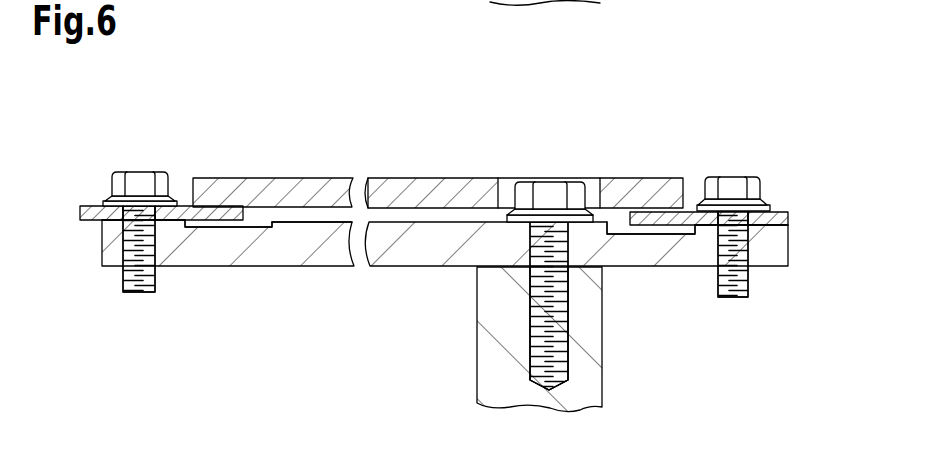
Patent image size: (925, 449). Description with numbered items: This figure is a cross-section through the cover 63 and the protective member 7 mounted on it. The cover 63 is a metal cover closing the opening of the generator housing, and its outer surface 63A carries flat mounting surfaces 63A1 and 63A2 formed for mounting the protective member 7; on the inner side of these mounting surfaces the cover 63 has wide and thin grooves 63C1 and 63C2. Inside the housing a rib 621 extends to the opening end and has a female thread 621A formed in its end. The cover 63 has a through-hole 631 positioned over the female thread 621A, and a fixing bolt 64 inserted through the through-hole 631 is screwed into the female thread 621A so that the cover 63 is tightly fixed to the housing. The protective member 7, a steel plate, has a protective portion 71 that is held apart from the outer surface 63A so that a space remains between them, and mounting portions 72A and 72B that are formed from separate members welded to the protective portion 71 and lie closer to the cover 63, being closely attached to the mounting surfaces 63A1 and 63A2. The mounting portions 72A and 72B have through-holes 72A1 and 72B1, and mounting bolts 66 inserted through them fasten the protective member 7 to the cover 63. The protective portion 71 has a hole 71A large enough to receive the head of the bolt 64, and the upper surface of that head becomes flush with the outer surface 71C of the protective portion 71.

The protective member 7 is at (464, 146).
The cover 63 is at (293, 250).
The outer surface 63A is at (330, 220).
The mounting surface 63A1 is at (773, 212).
The mounting surface 63A2 is at (108, 200).
The groove 63C1 is at (617, 230).
The groove 63C2 is at (251, 227).
The bolt 64 is at (548, 197).
The bolt 66 is at (140, 182).
The protective portion 71 is at (416, 185).
The hole 71A is at (501, 180).
The outer surface 71C is at (383, 179).
The mounting portion 72A is at (688, 211).
The through-hole 72A1 is at (748, 243).
The mounting portion 72B is at (184, 205).
The through-hole 72B1 is at (140, 225).
The rib 621 is at (588, 363).
The female thread 621A is at (535, 340).
The through-hole 631 is at (533, 262).